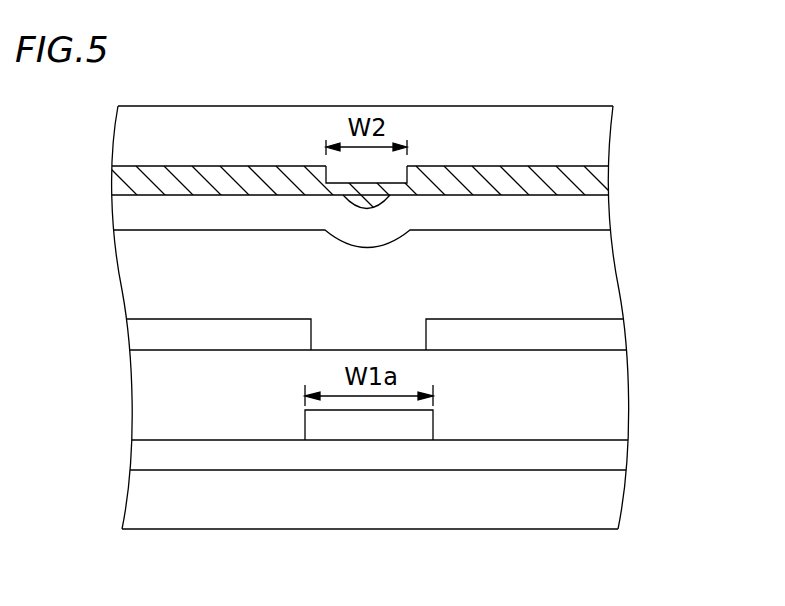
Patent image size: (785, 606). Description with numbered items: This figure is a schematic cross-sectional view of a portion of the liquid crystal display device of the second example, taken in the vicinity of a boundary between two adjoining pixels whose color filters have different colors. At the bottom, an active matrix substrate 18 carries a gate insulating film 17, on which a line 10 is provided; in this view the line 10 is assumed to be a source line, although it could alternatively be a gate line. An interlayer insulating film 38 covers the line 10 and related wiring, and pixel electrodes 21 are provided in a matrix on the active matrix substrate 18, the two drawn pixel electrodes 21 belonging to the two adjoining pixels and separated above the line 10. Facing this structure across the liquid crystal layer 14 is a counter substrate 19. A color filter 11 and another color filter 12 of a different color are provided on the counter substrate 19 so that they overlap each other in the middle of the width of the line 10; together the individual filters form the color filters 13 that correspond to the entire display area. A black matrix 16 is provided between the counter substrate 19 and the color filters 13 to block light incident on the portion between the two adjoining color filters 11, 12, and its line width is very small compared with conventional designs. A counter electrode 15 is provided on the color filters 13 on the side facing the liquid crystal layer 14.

The line 10 is at (380, 430).
The color filter 11 is at (586, 181).
The color filter 12 is at (132, 178).
The color filters 13 is at (190, 173).
The liquid crystal layer 14 is at (588, 265).
The counter electrode 15 is at (590, 215).
The black matrix 16 is at (395, 177).
The gate insulating film 17 is at (610, 460).
The active matrix substrate 18 is at (607, 507).
The counter substrate 19 is at (590, 133).
The pixel electrodes 21 is at (612, 337).
The interlayer insulating film 38 is at (604, 380).